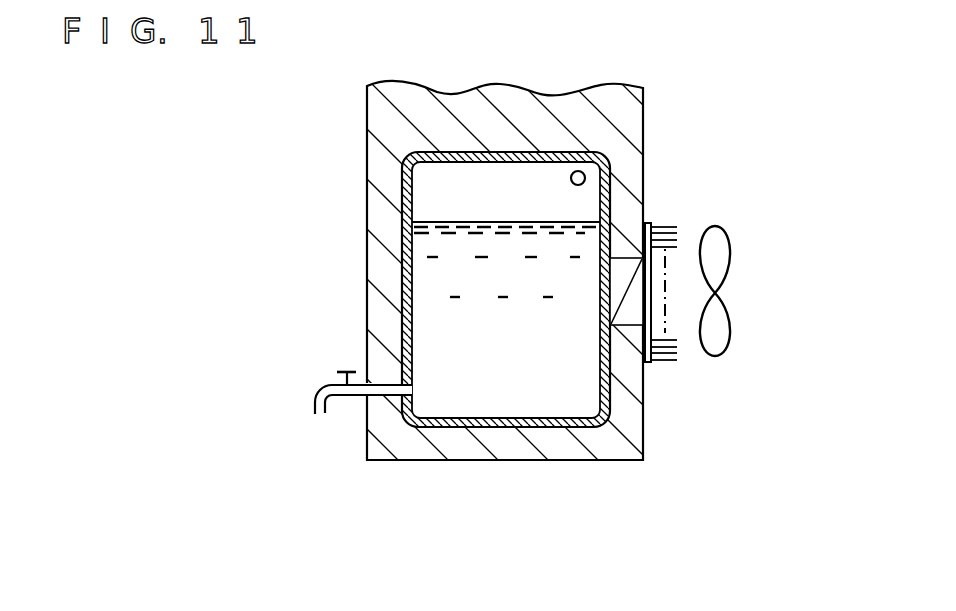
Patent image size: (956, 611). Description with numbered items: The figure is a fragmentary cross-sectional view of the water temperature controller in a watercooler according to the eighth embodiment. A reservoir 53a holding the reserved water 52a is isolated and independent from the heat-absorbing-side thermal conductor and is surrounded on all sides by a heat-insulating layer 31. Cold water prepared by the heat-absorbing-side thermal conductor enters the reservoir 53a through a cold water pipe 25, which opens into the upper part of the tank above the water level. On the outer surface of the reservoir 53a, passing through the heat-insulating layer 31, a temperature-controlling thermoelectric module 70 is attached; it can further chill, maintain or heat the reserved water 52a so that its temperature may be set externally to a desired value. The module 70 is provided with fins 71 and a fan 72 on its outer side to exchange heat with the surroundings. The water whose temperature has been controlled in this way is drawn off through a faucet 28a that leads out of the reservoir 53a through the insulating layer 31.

The cold water pipe 25 is at (586, 179).
The faucet 28a is at (318, 382).
The heat-insulating layer 31 is at (563, 445).
The reserved water 52a is at (523, 372).
The reservoir 53a is at (460, 421).
The temperature-controlling thermoelectric module 70 is at (641, 402).
The fins 71 is at (668, 362).
The fan 72 is at (722, 340).